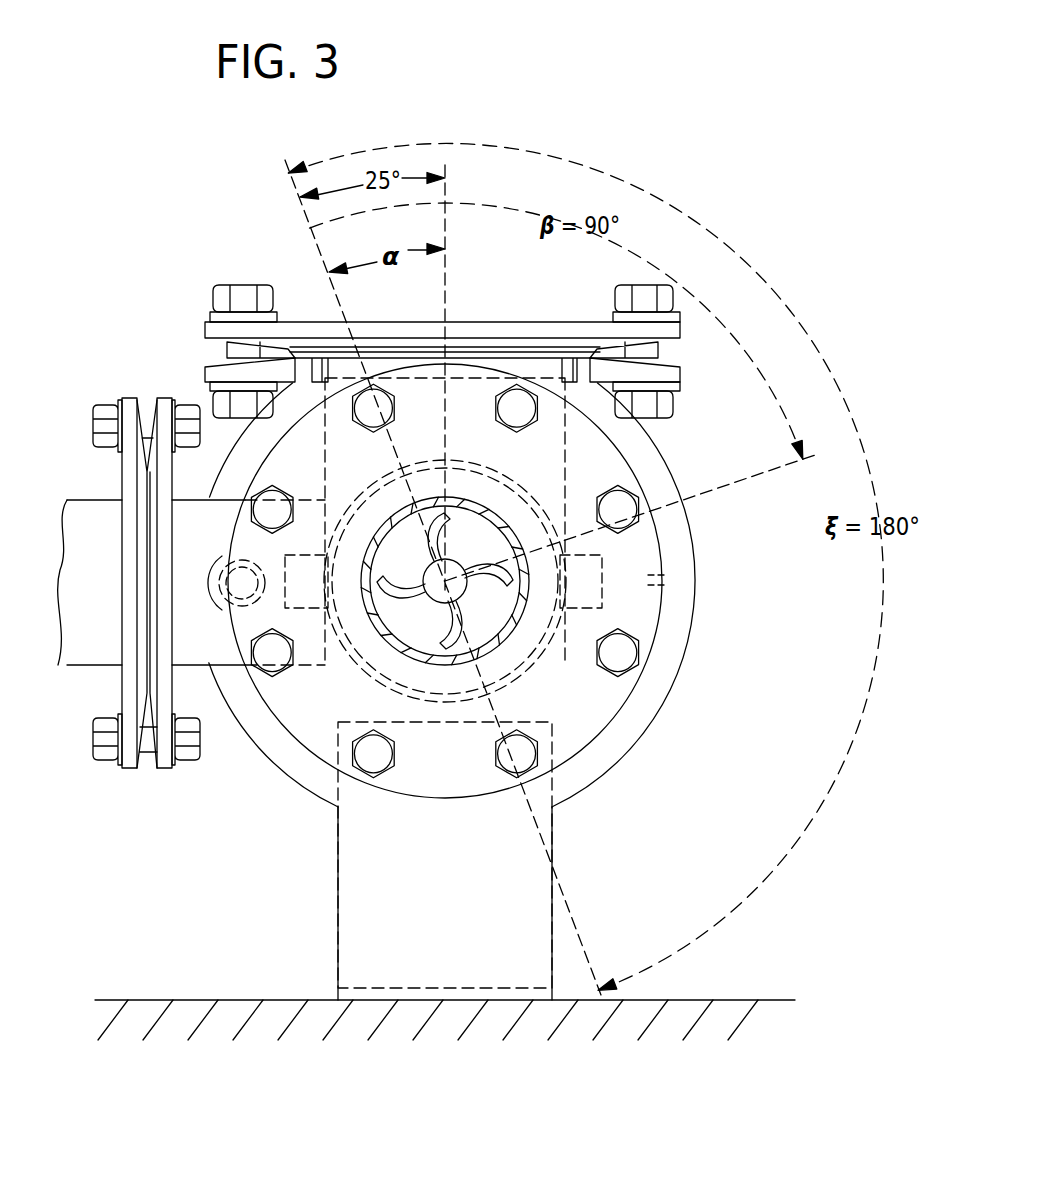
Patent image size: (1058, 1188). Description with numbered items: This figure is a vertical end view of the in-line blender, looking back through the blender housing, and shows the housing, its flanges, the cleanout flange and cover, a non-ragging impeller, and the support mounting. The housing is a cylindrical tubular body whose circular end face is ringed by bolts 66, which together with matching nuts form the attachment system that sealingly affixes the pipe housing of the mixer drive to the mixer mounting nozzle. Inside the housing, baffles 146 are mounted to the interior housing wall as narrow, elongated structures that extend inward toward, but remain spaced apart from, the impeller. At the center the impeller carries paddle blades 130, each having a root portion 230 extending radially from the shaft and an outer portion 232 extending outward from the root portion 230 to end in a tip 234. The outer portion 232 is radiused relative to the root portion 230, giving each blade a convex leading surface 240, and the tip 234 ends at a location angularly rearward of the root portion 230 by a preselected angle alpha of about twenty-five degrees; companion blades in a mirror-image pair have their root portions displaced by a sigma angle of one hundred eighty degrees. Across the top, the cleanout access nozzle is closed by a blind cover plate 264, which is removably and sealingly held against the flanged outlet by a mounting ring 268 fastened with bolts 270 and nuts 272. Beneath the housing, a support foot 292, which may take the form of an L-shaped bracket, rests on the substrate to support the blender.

The bolt 66 is at (258, 510).
The paddle blade 130 is at (452, 525).
The baffle 146 is at (350, 577).
The root portion 230 is at (427, 625).
The outer portion 232 is at (440, 695).
The tip 234 is at (432, 517).
The convex leading surface 240 is at (548, 606).
The blind cover plate 264 is at (460, 332).
The mounting ring 268 is at (225, 370).
The bolt 270 is at (237, 296).
The nut 272 is at (668, 402).
The support foot 292 is at (353, 880).